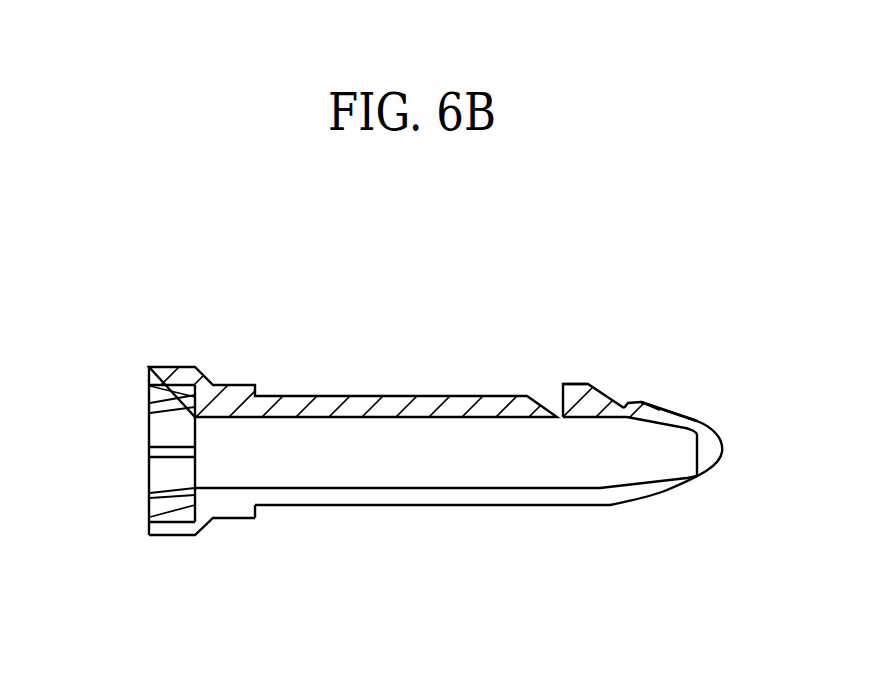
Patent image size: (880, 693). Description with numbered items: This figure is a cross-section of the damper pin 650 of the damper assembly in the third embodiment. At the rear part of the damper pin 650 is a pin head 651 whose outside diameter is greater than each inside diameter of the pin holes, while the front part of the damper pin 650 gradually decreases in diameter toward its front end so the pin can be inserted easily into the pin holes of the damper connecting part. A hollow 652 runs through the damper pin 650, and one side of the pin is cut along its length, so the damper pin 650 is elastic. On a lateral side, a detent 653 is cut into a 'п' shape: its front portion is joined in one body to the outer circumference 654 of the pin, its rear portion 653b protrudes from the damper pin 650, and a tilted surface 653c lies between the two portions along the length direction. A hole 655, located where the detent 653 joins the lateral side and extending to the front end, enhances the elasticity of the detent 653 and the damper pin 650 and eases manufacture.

The damper pin 650 is at (420, 536).
The pin head 651 is at (171, 377).
The hollow 652 is at (220, 470).
The detent 653 is at (552, 388).
The rear portion 653b is at (578, 385).
The tilted surface 653c is at (601, 397).
The outer circumference 654 is at (402, 396).
The hole 655 is at (653, 417).